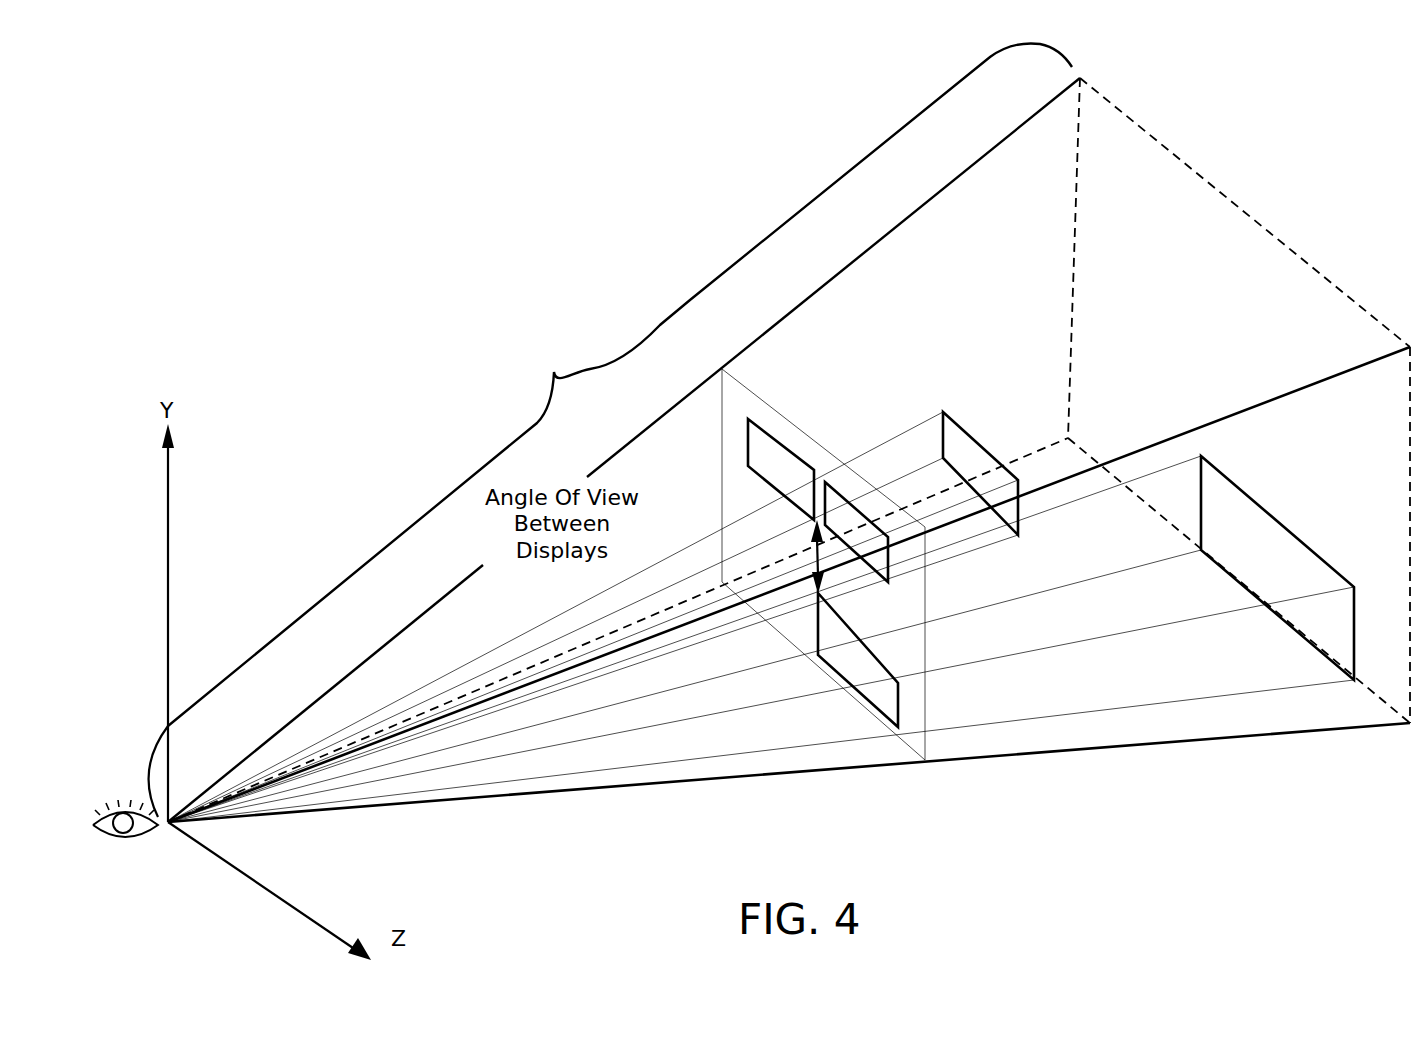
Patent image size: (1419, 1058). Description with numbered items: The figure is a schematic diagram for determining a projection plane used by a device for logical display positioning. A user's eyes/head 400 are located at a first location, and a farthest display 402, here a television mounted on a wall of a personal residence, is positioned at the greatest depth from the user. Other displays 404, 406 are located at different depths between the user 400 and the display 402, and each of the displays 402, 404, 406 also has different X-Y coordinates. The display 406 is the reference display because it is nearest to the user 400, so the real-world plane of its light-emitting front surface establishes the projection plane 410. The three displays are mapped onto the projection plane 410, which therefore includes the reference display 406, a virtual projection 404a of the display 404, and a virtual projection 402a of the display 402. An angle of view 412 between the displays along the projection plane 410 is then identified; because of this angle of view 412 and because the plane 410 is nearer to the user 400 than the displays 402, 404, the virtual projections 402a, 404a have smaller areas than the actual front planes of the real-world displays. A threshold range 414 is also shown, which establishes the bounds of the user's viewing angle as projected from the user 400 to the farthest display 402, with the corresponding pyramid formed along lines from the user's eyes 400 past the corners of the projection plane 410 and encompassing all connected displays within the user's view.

The user's eyes/head 400 is at (125, 838).
The farthest display 402 is at (1235, 500).
The virtual projection of the display 402 402a is at (868, 695).
The other display 404 is at (962, 440).
The virtual projection of the display 404 404a is at (890, 565).
The reference display 406 is at (766, 445).
The projection plane 410 is at (792, 636).
The angle of view 412 is at (812, 548).
The threshold range 414 is at (554, 372).